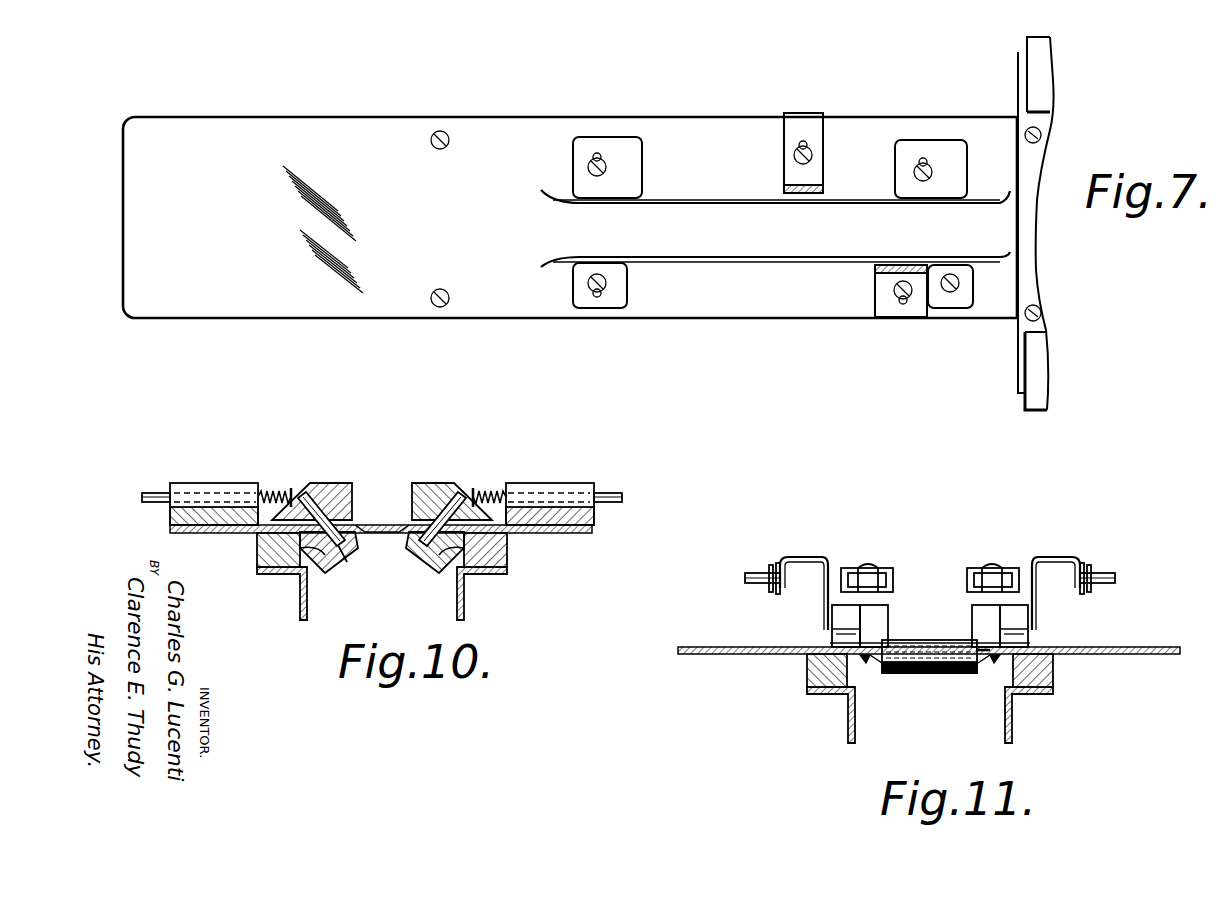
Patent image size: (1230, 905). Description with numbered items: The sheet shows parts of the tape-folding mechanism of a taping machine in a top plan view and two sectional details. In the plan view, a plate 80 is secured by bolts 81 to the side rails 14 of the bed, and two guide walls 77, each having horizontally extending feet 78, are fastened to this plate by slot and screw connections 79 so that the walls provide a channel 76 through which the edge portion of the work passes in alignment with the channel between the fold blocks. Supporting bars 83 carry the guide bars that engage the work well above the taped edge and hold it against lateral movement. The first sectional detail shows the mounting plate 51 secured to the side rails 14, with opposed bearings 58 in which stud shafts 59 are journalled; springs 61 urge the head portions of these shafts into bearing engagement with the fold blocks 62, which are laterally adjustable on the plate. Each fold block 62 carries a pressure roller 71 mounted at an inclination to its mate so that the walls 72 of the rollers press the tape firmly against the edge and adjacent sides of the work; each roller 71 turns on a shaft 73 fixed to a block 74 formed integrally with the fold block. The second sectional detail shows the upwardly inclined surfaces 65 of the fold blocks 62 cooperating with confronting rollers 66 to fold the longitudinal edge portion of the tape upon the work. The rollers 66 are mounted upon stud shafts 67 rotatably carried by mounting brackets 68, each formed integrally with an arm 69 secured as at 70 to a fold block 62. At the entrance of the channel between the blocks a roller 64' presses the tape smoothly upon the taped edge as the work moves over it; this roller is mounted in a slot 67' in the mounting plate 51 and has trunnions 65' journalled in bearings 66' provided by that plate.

In FIG. 10, the side rails 14 is at (300, 590).
In FIG. 11, the side rails 14 is at (848, 708).
In FIG. 7, the mounting plate 51 is at (1032, 260).
In FIG. 10, the mounting plate 51 is at (590, 533).
In FIG. 11, the mounting plate 51 is at (1120, 650).
In FIG. 7, the bearings 58 is at (1040, 75).
In FIG. 10, the bearings 58 is at (215, 483).
In FIG. 10, the stud shafts 59 is at (150, 490).
In FIG. 10, the springs 61 is at (276, 493).
In FIG. 10, the fold blocks 62 is at (314, 483).
In FIG. 11, the fold blocks 62 is at (977, 603).
In FIG. 11, the roller 64' is at (929, 632).
In FIG. 11, the upwardly inclined surfaces 65 is at (930, 626).
In FIG. 11, the trunnions 65' is at (930, 679).
In FIG. 11, the rollers 66 is at (930, 566).
In FIG. 11, the bearings 66' is at (930, 685).
In FIG. 11, the stud shafts 67 is at (933, 587).
In FIG. 11, the slot 67' is at (966, 629).
In FIG. 11, the mounting brackets 68 is at (818, 557).
In FIG. 11, the arms 69 is at (822, 603).
In FIG. 11, the securing point 70 is at (826, 620).
In FIG. 10, the pressure rollers 71 is at (330, 572).
In FIG. 10, the walls 72 is at (348, 495).
In FIG. 10, the shaft 73 is at (345, 555).
In FIG. 10, the block 74 is at (283, 500).
In FIG. 7, the channel 76 is at (777, 240).
In FIG. 7, the guide walls 77 is at (842, 198).
In FIG. 7, the feet 78 is at (645, 148).
In FIG. 7, the slot and screw connections 79 is at (600, 160).
In FIG. 7, the plate 80 is at (530, 310).
In FIG. 7, the bolts 81 is at (447, 132).
In FIG. 7, the supporting bars 83 is at (785, 185).